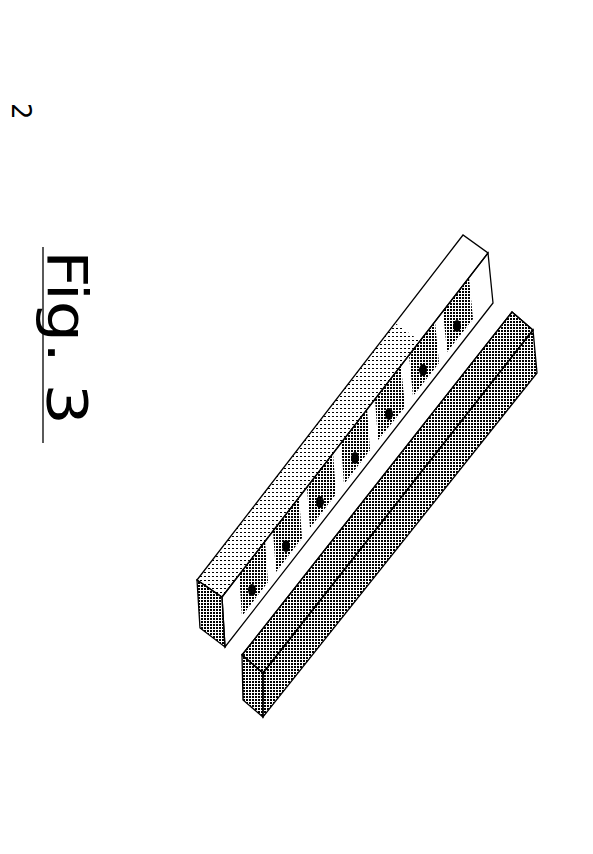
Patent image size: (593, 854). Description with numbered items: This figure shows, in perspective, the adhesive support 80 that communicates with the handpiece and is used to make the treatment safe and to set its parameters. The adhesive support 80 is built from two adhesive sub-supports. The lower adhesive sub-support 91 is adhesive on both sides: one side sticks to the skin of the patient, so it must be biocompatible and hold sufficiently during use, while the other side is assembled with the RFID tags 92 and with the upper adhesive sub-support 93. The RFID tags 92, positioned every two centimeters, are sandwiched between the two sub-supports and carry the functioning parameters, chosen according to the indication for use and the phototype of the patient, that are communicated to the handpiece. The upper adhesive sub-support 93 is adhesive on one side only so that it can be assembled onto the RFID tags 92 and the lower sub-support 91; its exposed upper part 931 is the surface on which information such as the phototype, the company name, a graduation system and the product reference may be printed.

The slotted bar assembly 80 is at (366, 388).
The lower adhesive sub-support 91 is at (370, 348).
The RFID tags 92 is at (327, 447).
The upper adhesive sub-support 93 is at (395, 525).
The top surface of base block 931 is at (337, 604).